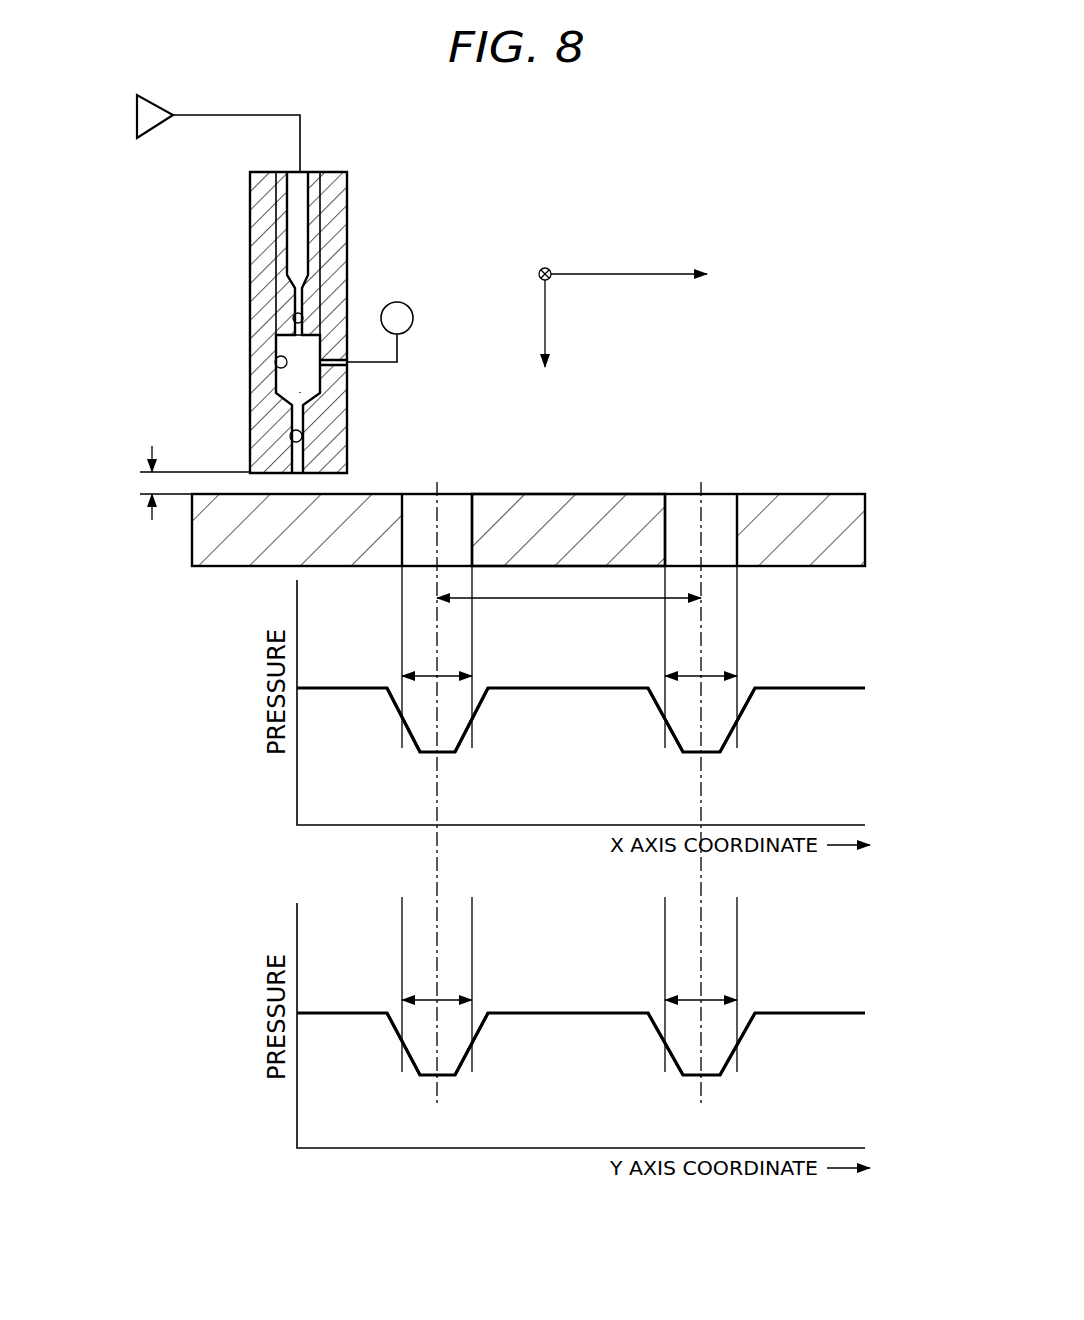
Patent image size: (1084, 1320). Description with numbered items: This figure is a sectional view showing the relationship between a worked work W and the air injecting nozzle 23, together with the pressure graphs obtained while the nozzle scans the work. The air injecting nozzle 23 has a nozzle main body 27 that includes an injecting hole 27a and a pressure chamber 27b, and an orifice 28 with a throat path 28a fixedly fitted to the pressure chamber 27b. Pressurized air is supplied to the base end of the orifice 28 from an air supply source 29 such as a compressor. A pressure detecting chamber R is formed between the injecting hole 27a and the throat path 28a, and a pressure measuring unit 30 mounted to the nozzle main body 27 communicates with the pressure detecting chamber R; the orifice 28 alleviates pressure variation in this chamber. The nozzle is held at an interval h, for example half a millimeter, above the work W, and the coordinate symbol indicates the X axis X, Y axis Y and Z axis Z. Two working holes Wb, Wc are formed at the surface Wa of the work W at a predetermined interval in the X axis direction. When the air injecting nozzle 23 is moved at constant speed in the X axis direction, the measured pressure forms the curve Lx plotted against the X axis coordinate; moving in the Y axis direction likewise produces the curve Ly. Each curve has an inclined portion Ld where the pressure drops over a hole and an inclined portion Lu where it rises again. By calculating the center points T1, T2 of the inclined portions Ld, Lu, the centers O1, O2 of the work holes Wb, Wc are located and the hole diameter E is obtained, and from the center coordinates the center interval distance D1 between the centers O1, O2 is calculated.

The air injecting nozzle 23 is at (366, 226).
The air supply source 29 is at (153, 107).
The nozzle main body 27 is at (258, 318).
The throat path 28a is at (320, 296).
The orifice 28 is at (294, 290).
The pressure chamber 27b is at (277, 358).
The injecting hole 27a is at (292, 434).
The pressure detecting chamber R is at (300, 392).
The pressure measuring unit 30 is at (411, 314).
The interval h is at (186, 483).
The work W is at (528, 505).
The surface Wa is at (582, 494).
The hole Wb is at (472, 527).
The hole Wc is at (737, 527).
The center O1 is at (439, 627).
The center O2 is at (703, 627).
The center interval distance D1 is at (569, 585).
The hole diameter E is at (453, 671).
The curve Lx is at (572, 688).
The curve Ly is at (572, 1013).
The inclined portion Ld is at (390, 702).
The inclined portion Lu is at (485, 703).
The center point T1 is at (398, 722).
The center point T2 is at (477, 722).
The X axis X is at (643, 274).
The Y axis Y is at (545, 268).
The Z axis Z is at (544, 338).